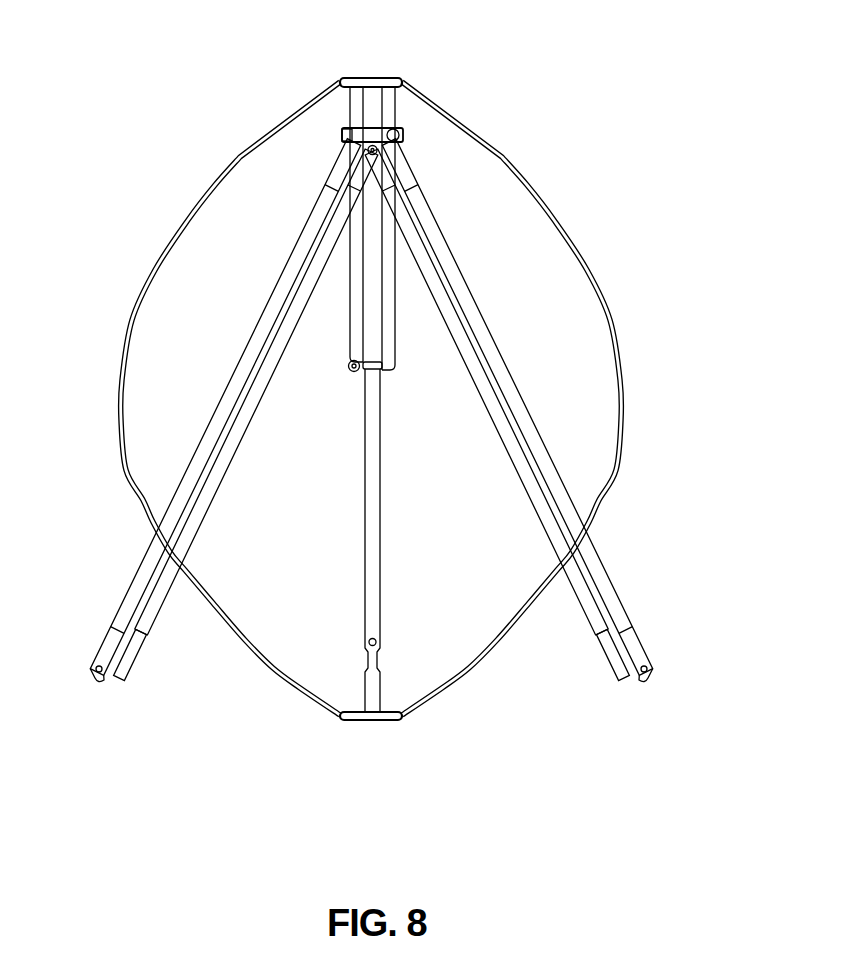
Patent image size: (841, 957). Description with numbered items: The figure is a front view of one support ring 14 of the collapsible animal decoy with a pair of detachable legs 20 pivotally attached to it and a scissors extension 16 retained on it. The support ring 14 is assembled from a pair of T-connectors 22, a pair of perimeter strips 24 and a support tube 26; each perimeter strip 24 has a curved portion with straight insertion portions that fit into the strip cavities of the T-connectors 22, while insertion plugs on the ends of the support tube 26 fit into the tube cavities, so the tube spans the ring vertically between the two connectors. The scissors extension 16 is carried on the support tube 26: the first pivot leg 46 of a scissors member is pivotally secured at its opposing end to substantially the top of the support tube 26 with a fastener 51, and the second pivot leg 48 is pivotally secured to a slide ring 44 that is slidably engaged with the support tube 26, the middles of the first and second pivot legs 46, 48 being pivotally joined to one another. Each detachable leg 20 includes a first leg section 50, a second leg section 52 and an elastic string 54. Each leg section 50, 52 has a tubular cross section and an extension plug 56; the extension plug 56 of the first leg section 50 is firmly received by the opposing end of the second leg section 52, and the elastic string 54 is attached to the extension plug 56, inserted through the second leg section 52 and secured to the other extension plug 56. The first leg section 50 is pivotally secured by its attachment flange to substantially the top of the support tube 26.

The support ring 14 is at (226, 147).
The scissors extension 16 is at (358, 115).
The detachable leg 20 is at (150, 428).
The T-connector 22 is at (380, 78).
The perimeter strip 24 is at (599, 270).
The support tube 26 is at (384, 508).
The slide ring 44 is at (378, 369).
The first pivot leg 46 is at (345, 128).
The second pivot leg 48 is at (355, 318).
The first leg section 50 is at (157, 607).
The fastener 51 is at (345, 128).
The second leg section 52 is at (132, 582).
The elastic string 54 is at (97, 690).
The extension plug 56 is at (418, 165).